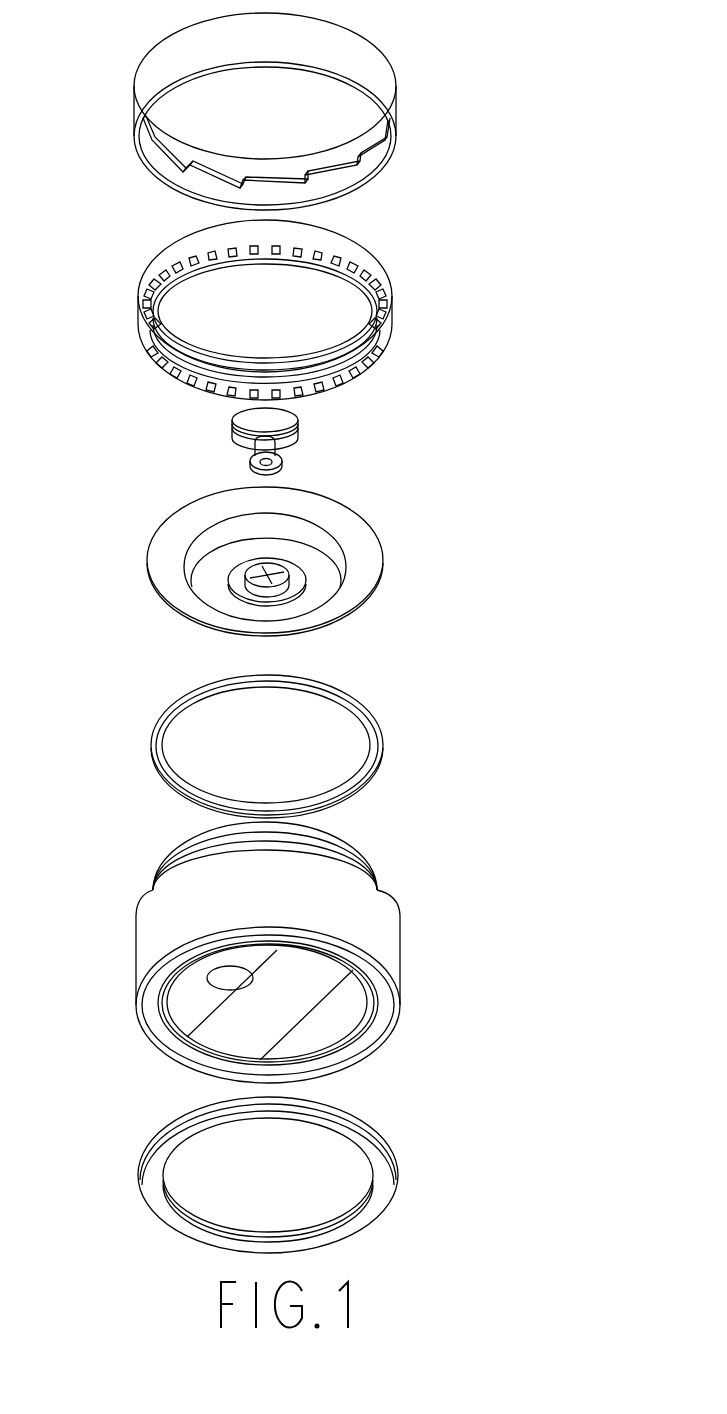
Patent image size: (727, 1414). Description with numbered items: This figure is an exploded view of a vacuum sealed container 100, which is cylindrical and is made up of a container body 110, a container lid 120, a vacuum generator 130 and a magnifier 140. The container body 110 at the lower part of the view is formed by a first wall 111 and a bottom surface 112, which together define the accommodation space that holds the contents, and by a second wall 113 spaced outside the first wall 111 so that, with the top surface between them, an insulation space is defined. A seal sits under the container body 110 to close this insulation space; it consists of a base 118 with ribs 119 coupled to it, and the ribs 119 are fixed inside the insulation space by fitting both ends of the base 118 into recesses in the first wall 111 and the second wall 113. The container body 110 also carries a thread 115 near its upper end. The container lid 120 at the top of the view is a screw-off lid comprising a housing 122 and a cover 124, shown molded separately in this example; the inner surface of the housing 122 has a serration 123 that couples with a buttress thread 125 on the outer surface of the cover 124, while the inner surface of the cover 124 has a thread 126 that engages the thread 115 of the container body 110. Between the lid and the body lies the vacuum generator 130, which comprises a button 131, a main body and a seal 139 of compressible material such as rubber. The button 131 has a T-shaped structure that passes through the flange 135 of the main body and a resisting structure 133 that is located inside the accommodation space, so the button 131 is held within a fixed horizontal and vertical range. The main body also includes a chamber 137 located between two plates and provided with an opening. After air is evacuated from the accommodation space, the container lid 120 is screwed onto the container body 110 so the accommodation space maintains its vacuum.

The vacuum sealed container 100 is at (624, 1262).
The container body 110 is at (498, 823).
The first wall 111 is at (365, 968).
The bottom surface 112 is at (350, 1000).
The second wall 113 is at (382, 930).
The thread 115 is at (368, 858).
The base 118 is at (388, 1180).
The ribs 119 is at (358, 1128).
The container lid 120 is at (500, 72).
The housing 122 is at (396, 86).
The serration 123 is at (378, 152).
The cover 124 is at (368, 268).
The teeth 125 is at (340, 258).
The thread 126 is at (383, 352).
The vacuum generator 130 is at (490, 403).
The button 131 is at (300, 440).
The resisting structure 133 is at (283, 468).
The flange 135 is at (288, 577).
The chamber 137 is at (300, 548).
The seal 139 is at (378, 745).
The magnifier 140 is at (218, 984).